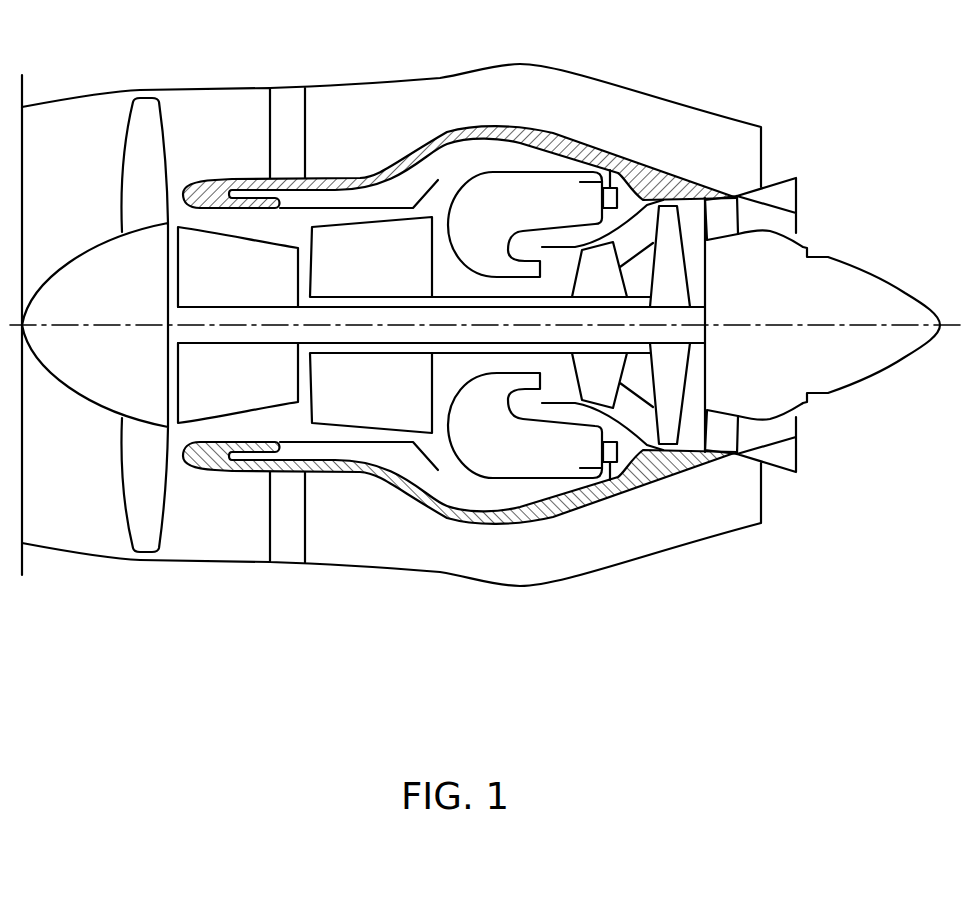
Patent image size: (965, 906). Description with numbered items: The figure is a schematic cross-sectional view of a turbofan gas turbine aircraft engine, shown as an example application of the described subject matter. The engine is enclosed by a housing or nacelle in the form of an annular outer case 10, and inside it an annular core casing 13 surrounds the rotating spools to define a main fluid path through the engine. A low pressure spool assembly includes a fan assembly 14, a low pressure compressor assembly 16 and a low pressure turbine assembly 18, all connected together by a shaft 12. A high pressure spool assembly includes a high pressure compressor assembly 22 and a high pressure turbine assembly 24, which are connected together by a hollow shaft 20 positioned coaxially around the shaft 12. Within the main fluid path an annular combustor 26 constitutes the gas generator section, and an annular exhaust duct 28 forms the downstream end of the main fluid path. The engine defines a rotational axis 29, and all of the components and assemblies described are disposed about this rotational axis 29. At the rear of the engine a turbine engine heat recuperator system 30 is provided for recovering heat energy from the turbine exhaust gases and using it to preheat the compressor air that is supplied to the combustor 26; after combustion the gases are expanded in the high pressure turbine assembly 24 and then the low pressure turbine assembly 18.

The annular outer case 10 is at (428, 75).
The shaft 12 is at (248, 307).
The annular core casing 13 is at (477, 130).
The fan assembly 14 is at (125, 143).
The low pressure compressor assembly 16 is at (197, 265).
The low pressure turbine assembly 18 is at (683, 227).
The hollow shaft 20 is at (367, 295).
The high pressure compressor assembly 22 is at (333, 250).
The high pressure turbine assembly 24 is at (618, 247).
The annular combustor 26 is at (532, 198).
The annular exhaust duct 28 is at (753, 222).
The rotational axis 29 is at (964, 300).
The turbine engine heat recuperator system 30 is at (722, 215).